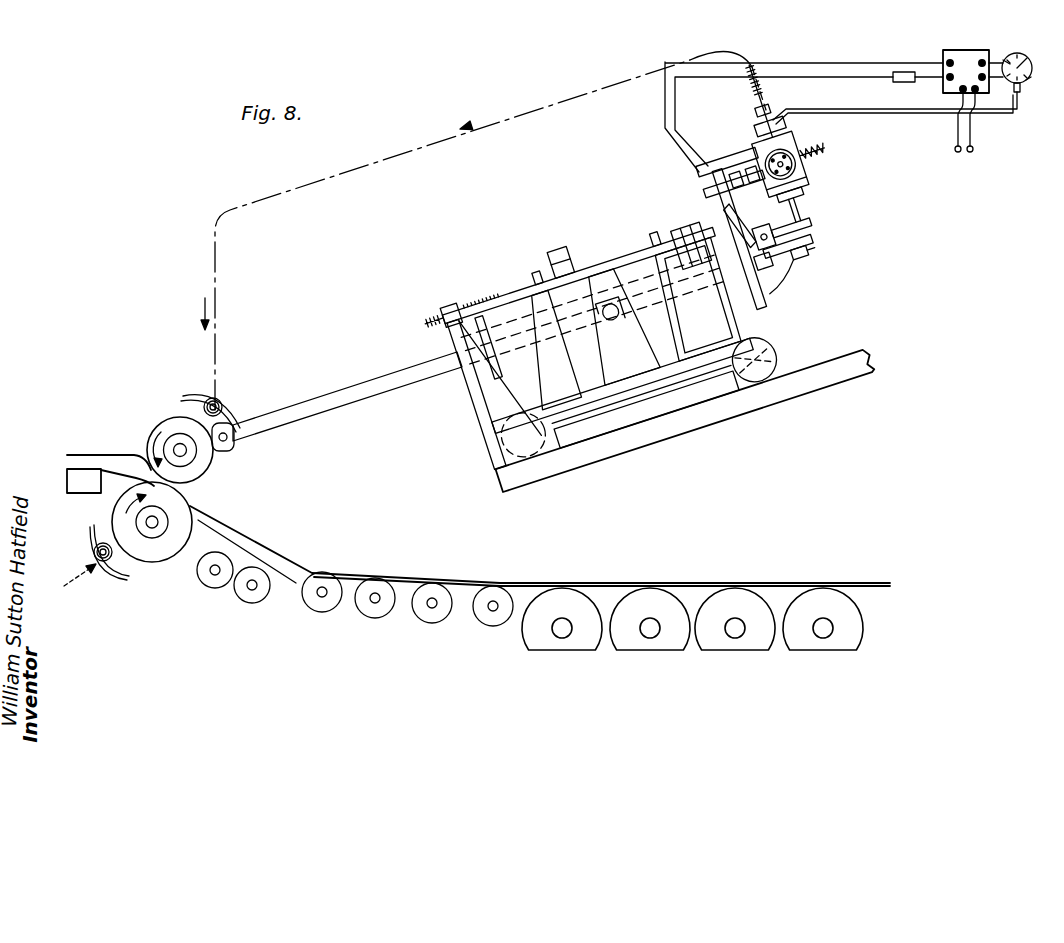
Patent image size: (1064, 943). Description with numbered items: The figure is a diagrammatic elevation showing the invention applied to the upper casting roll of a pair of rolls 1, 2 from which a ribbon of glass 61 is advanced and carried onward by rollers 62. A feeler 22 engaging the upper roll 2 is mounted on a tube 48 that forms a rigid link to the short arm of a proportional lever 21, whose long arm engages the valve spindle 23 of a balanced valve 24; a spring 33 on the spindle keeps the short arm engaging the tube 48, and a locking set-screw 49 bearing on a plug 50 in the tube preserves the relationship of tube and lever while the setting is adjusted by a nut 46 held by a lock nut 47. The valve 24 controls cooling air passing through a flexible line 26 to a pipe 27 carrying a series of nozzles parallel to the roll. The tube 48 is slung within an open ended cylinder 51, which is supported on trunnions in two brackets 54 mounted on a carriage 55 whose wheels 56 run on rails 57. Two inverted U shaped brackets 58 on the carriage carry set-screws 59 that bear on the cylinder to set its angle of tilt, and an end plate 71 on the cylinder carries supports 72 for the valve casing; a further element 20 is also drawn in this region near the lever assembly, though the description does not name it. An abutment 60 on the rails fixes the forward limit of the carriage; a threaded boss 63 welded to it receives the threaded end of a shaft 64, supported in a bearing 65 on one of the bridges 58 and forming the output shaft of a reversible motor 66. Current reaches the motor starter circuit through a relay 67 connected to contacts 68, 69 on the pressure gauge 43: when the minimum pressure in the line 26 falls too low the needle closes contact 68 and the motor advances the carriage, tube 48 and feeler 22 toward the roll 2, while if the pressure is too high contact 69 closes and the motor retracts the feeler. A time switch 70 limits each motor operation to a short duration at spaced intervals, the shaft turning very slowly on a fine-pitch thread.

The casting roll 1 is at (158, 556).
The upper roll 2 is at (158, 436).
The switch 20 is at (805, 229).
The proportional lever 21 is at (806, 242).
The feeler 22 is at (226, 457).
The valve spindle 23 is at (722, 173).
The balanced valve 24 is at (802, 144).
The flexible line 26 is at (398, 150).
The pipe 27 is at (201, 410).
The spring 33 is at (818, 160).
The pressure gauge 43 is at (1033, 67).
The nut 46 is at (745, 175).
The lock nut 47 is at (732, 176).
The tube 48 is at (269, 417).
The locking set-screw 49 is at (803, 257).
The plug 50 is at (766, 273).
The open ended cylinder 51 is at (478, 370).
The brackets 54 is at (617, 368).
The carriage 55 is at (648, 402).
The wheels 56 is at (546, 419).
The rails 57 is at (601, 462).
The inverted U shaped brackets 58 is at (549, 395).
The set-screws 59 is at (537, 277).
The abutment 60 is at (489, 409).
The ribbon of glass 61 is at (300, 567).
The rollers 62 is at (370, 613).
The threaded boss 63 is at (455, 299).
The shaft 64 is at (478, 298).
The bearing 65 is at (562, 268).
The reversible motor 66 is at (689, 233).
The relay 67 is at (943, 86).
The contact 68 is at (1030, 78).
The contact 69 is at (1006, 58).
The time switch 70 is at (900, 83).
The end plate 71 is at (697, 160).
The supports 72 is at (737, 150).